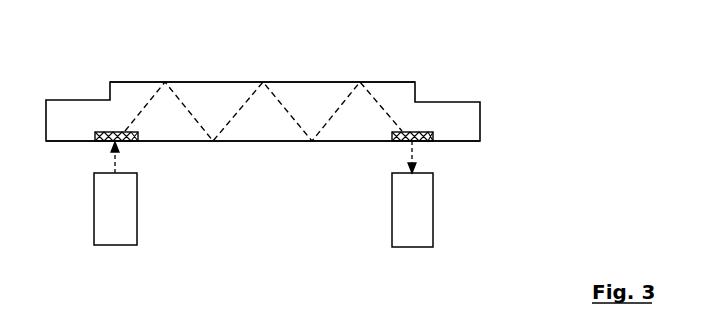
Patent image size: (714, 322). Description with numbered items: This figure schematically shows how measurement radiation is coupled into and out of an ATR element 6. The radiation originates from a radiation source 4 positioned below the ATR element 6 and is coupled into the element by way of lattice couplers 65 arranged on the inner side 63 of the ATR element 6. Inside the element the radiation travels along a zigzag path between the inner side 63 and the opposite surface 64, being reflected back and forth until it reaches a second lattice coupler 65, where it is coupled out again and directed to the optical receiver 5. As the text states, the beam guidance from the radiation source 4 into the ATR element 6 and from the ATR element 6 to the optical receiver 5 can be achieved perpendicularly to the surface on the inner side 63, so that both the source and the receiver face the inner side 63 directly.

The radiation source 4 is at (108, 208).
The optical receiver 5 is at (420, 210).
The ATR element 6 is at (195, 102).
The inner side 63 is at (297, 141).
The top surface 64 is at (298, 82).
The lattice couplers 65 is at (132, 141).